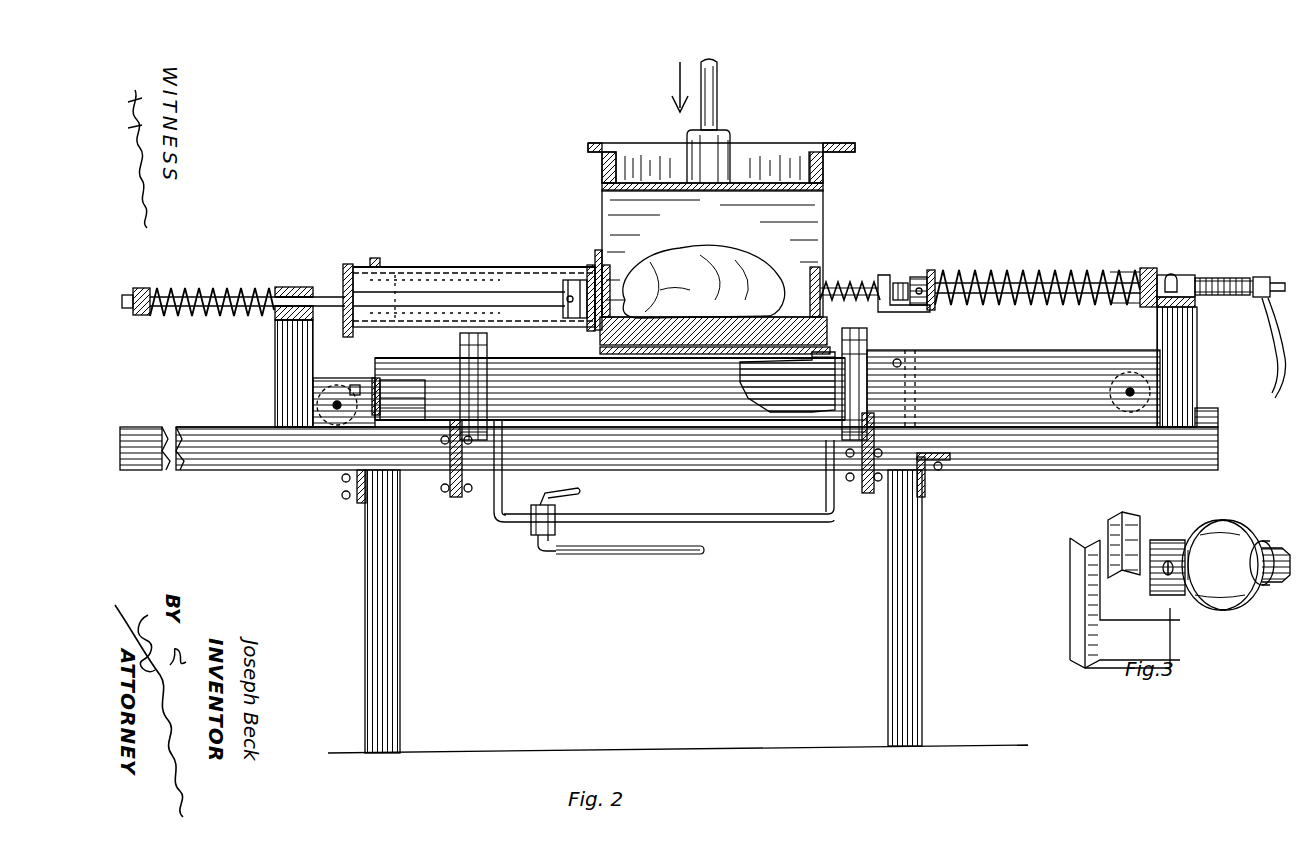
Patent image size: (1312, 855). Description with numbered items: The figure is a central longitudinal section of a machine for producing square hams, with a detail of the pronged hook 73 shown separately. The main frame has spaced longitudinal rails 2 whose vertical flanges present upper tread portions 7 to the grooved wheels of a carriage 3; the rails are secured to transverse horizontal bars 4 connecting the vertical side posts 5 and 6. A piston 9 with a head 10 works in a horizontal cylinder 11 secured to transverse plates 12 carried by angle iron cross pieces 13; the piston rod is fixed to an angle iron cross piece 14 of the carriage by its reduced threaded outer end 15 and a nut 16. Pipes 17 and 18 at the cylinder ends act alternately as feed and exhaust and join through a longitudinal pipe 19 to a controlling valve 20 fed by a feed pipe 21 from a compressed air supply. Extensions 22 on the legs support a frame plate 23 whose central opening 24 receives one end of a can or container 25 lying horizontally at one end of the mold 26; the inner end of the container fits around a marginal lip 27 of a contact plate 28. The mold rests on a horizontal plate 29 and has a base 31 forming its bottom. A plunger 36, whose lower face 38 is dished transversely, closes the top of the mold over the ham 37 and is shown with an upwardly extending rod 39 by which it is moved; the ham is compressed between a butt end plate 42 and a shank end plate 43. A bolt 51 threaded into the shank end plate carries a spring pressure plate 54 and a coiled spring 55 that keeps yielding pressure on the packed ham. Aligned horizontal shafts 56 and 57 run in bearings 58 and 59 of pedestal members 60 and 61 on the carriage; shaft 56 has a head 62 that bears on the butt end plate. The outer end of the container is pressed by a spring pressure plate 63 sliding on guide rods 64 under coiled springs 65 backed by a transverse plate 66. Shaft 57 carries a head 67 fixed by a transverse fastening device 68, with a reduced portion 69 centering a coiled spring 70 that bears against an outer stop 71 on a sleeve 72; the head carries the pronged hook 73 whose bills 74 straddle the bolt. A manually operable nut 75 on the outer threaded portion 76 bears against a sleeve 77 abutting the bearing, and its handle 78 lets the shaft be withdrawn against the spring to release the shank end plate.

In FIG. 2, the longitudinal rails 2 is at (247, 455).
In FIG. 2, the carriage 3 is at (1022, 380).
In FIG. 2, the transverse horizontal bars 4 is at (357, 505).
In FIG. 2, the vertical side post 5 is at (900, 637).
In FIG. 2, the vertical side post 6 is at (392, 672).
In FIG. 2, the upper tread portions 7 is at (226, 427).
In FIG. 2, the piston 9 is at (410, 398).
In FIG. 2, the head 10 is at (790, 400).
In FIG. 2, the cylinder 11 is at (610, 397).
In FIG. 2, the transverse plates 12 is at (468, 495).
In FIG. 2, the angle iron cross pieces 13 is at (450, 475).
In FIG. 2, the angle iron cross piece 14 is at (330, 400).
In FIG. 2, the outer end of the piston rod 15 is at (355, 395).
In FIG. 2, the nut 16 is at (374, 400).
In FIG. 2, the pipe 17 is at (503, 490).
In FIG. 2, the pipe 18 is at (826, 488).
In FIG. 2, the longitudinal pipe 19 is at (733, 522).
In FIG. 2, the controlling valve 20 is at (538, 548).
In FIG. 2, the feed pipe 21 is at (610, 555).
In FIG. 2, the extensions 22 is at (475, 345).
In FIG. 2, the frame plate 23 is at (374, 258).
In FIG. 2, the centrally arranged opening 24 is at (382, 268).
In FIG. 2, the can or container 25 is at (463, 265).
In FIG. 2, the mold 26 is at (812, 208).
In FIG. 2, the marginal lip 27 is at (590, 262).
In FIG. 2, the contact plate 28 is at (598, 250).
In FIG. 2, the horizontal plate 29 is at (867, 338).
In FIG. 2, the base 31 is at (800, 330).
In FIG. 2, the plunger 36 is at (828, 140).
In FIG. 2, the ham 37 is at (720, 235).
In FIG. 2, the lower face of the plunger 38 is at (670, 196).
In FIG. 2, the rod 39 is at (717, 98).
In FIG. 2, the butt end plate 42 is at (606, 265).
In FIG. 2, the shank end plate 43 is at (815, 268).
In FIG. 2, the bolt 51 is at (900, 283).
In FIG. 2, the spring pressure plate 54 is at (882, 275).
In FIG. 2, the coiled spring 55 is at (845, 280).
In FIG. 2, the horizontal shaft 56 is at (470, 295).
In FIG. 2, the horizontal shaft 57 is at (1035, 272).
In FIG. 3, the horizontal shaft 57 is at (1278, 580).
In FIG. 2, the bearing 58 is at (298, 287).
In FIG. 2, the bearing 59 is at (1168, 275).
In FIG. 2, the pedestal member 60 is at (275, 352).
In FIG. 2, the pedestal member 61 is at (1175, 348).
In FIG. 2, the head 62 is at (570, 318).
In FIG. 2, the spring pressure plate 63 is at (348, 265).
In FIG. 2, the guide rods 64 is at (195, 310).
In FIG. 2, the coiled springs 65 is at (215, 288).
In FIG. 2, the transverse plate 66 is at (140, 290).
In FIG. 2, the head 67 is at (930, 270).
In FIG. 3, the head 67 is at (1230, 522).
In FIG. 2, the transverse fastening device 68 is at (920, 305).
In FIG. 3, the transverse fastening device 68 is at (1168, 575).
In FIG. 3, the reduced portion 69 is at (1288, 525).
In FIG. 2, the coiled spring 70 is at (985, 270).
In FIG. 2, the outer stop 71 is at (1148, 268).
In FIG. 2, the sleeve 72 is at (1115, 270).
In FIG. 3, the pronged hook 73 is at (1115, 590).
In FIG. 3, the bills 74 is at (1120, 512).
In FIG. 2, the manually operable nut 75 is at (1262, 275).
In FIG. 2, the outer threaded portion 76 is at (1240, 275).
In FIG. 2, the sleeve 77 is at (1218, 296).
In FIG. 2, the handle 78 is at (1278, 395).